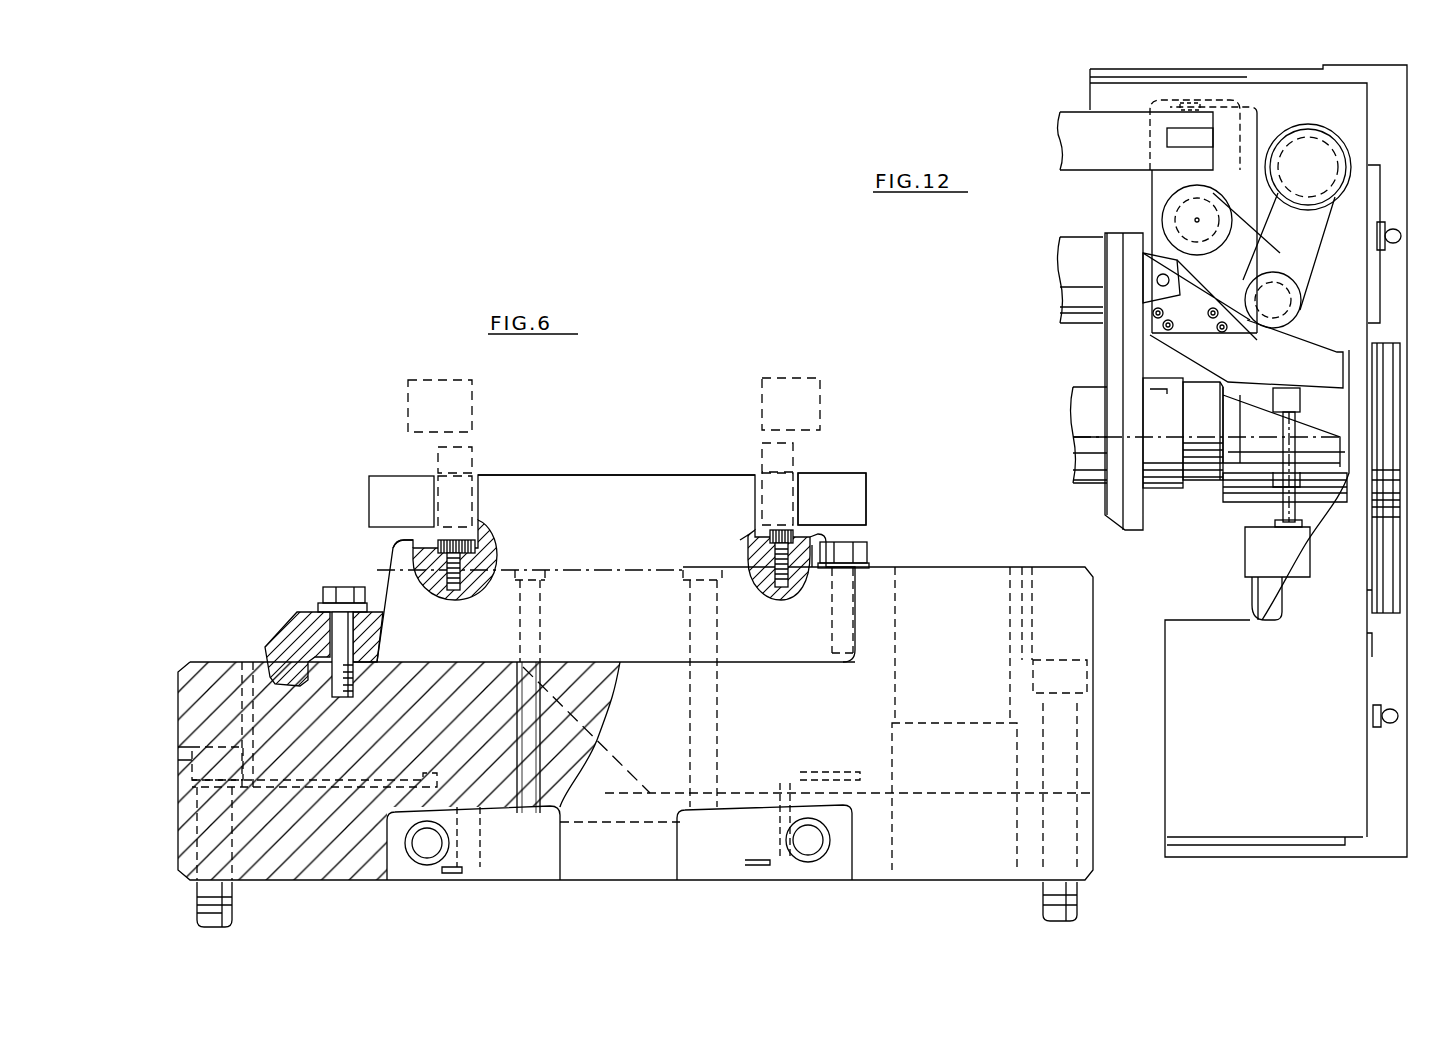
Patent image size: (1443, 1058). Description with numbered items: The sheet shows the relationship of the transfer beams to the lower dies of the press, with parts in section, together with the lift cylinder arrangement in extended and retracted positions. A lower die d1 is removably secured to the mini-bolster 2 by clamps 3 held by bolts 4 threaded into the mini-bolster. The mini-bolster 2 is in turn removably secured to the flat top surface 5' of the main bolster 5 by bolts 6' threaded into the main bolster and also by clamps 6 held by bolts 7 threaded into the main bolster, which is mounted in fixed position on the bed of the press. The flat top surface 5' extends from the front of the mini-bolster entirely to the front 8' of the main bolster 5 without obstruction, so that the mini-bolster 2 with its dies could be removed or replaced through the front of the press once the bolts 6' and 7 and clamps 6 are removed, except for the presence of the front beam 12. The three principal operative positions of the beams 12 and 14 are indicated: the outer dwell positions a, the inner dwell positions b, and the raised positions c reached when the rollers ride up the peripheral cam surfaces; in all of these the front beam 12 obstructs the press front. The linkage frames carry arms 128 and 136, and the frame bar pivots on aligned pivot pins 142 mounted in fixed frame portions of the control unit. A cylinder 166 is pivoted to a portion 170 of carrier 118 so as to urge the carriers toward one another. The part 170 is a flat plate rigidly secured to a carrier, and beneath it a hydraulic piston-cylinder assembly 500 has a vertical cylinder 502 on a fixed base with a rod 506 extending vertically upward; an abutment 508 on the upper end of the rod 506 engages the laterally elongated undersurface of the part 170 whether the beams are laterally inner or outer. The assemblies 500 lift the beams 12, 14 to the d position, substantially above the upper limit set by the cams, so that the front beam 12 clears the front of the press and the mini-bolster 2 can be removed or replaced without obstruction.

In FIG. 6, the mini-bolster 2 is at (622, 625).
In FIG. 6, the clamps 3 is at (400, 548).
In FIG. 6, the bolts 4 is at (497, 550).
In FIG. 6, the main bolster 5 is at (640, 710).
In FIG. 6, the flat top surface 5' is at (233, 640).
In FIG. 6, the clamps 6 is at (324, 629).
In FIG. 6, the bolts 6' is at (862, 589).
In FIG. 6, the bolts 7 is at (341, 587).
In FIG. 6, the front of the main bolster 8' is at (607, 747).
In FIG. 6, the front beam 12 is at (588, 452).
In FIG. 6, the beam 14 is at (866, 490).
In FIG. 6, the outer dwell positions a is at (412, 513).
In FIG. 6, the inner dwell positions b is at (464, 513).
In FIG. 6, the raised positions c is at (464, 471).
In FIG. 6, the lift position d is at (450, 417).
In FIG. 6, the lower die d1 is at (616, 502).
In FIG. 12, the carrier 118 is at (1165, 125).
In FIG. 12, the arm 128 is at (1242, 225).
In FIG. 12, the arm 136 is at (1312, 252).
In FIG. 12, the pivot pins 142 is at (1333, 162).
In FIG. 12, the cylinder 166 is at (1060, 292).
In FIG. 12, the part 170 is at (1313, 345).
In FIG. 12, the hydraulic piston-cylinder assembly 500 is at (1250, 580).
In FIG. 12, the vertical cylinder 502 is at (1245, 620).
In FIG. 12, the rod 506 is at (1287, 453).
In FIG. 12, the abutment 508 is at (1278, 388).